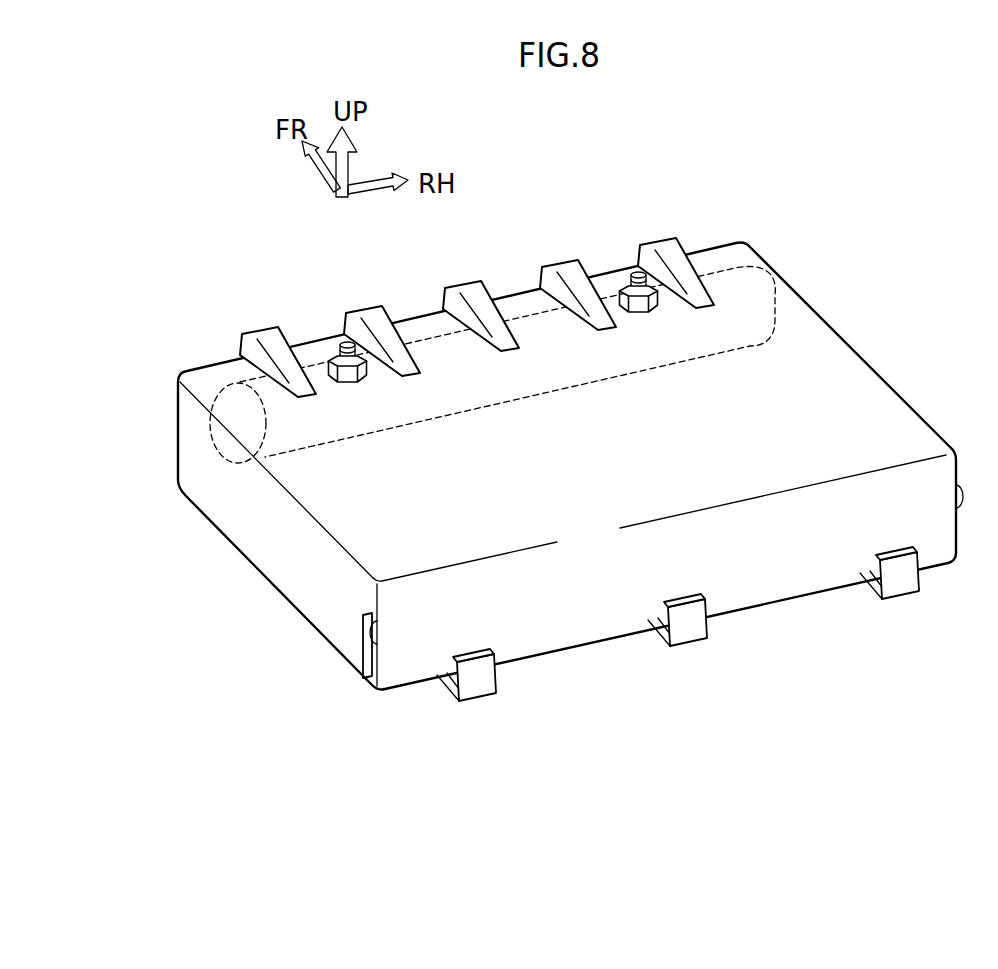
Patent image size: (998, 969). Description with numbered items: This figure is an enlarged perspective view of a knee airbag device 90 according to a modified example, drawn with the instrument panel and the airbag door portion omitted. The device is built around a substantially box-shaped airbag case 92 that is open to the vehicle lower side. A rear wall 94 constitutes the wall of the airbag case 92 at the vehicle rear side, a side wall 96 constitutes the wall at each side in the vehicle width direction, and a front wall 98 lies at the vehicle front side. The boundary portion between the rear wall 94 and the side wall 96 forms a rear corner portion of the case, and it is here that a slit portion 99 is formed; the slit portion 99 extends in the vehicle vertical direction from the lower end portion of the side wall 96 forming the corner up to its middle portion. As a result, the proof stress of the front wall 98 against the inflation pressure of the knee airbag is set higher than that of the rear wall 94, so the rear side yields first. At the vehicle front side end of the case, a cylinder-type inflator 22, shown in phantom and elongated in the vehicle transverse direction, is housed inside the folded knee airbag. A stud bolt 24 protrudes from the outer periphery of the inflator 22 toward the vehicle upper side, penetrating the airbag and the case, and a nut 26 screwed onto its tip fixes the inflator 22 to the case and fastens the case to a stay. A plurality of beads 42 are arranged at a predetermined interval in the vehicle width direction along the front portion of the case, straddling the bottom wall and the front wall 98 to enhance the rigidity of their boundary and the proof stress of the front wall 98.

The inflator 22 is at (793, 278).
The stud bolt 24 is at (345, 342).
The nut 26 is at (360, 380).
The beads 42 is at (470, 280).
The knee airbag device 90 is at (573, 418).
The airbag case 92 is at (842, 333).
The rear wall 94 is at (652, 550).
The side wall 96 is at (308, 556).
The front wall 98 is at (216, 357).
The slit portion 99 is at (377, 628).